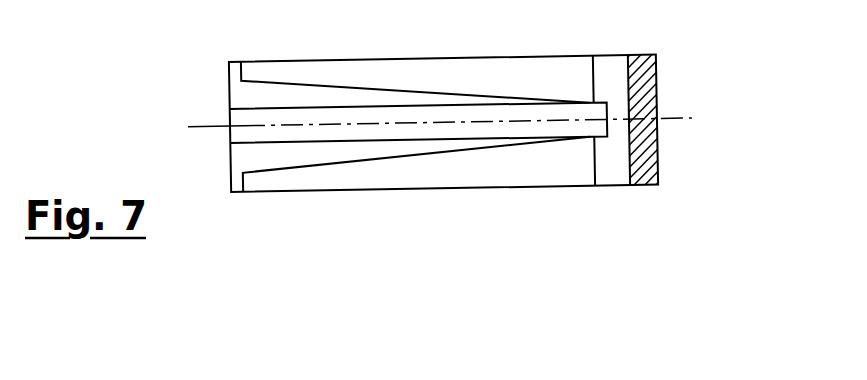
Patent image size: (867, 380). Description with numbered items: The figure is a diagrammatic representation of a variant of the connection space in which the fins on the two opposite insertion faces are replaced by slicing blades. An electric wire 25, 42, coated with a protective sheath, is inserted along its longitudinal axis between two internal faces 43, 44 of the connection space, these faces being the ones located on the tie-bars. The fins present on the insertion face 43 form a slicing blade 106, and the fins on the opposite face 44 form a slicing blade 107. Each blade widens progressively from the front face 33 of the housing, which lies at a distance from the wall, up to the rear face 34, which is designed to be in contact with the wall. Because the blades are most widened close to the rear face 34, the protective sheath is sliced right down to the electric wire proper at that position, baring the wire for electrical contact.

The electric wire 25 is at (413, 107).
The electric wire 42 is at (233, 115).
The front face 33 is at (213, 158).
The rear face 34 is at (667, 65).
The internal face 43 is at (322, 60).
The internal face 44 is at (338, 191).
The slicing blade 106 is at (485, 67).
The slicing blade 107 is at (518, 165).